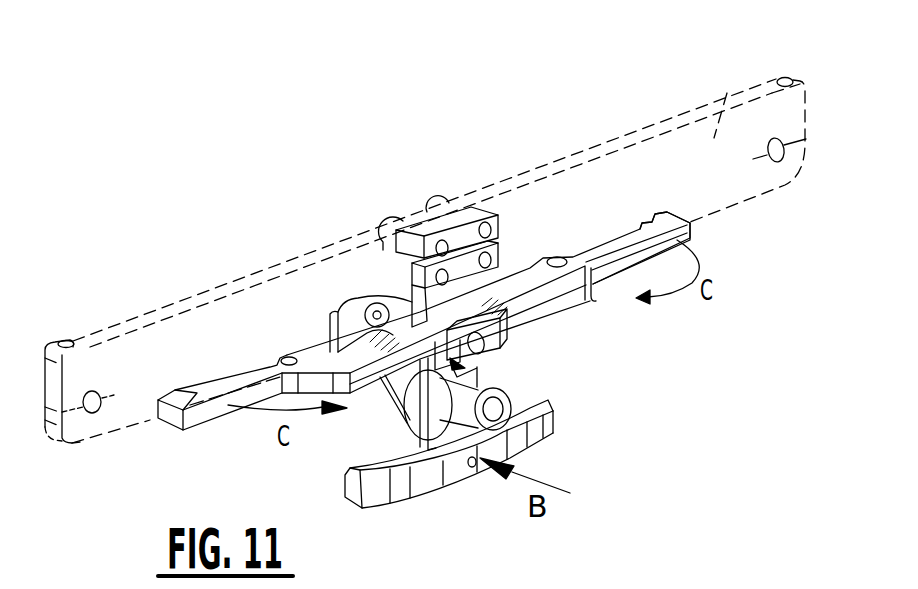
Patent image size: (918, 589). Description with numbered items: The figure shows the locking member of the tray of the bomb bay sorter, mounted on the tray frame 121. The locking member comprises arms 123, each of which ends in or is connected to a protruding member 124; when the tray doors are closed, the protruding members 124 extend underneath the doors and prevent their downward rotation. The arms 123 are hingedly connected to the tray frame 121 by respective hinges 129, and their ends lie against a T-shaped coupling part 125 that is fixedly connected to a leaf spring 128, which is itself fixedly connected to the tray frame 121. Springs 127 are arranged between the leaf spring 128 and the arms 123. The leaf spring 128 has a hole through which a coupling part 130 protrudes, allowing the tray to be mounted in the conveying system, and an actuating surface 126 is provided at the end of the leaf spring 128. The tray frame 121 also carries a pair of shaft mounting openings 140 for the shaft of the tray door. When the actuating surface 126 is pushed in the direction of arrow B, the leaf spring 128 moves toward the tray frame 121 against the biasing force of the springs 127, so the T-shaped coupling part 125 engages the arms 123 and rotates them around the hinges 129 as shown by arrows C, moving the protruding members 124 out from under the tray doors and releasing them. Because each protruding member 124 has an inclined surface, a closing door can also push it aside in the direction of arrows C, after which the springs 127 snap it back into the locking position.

The tray frame 121 is at (727, 92).
The arm 123 is at (197, 413).
The protruding member 124 is at (654, 214).
The T-shaped coupling part 125 is at (497, 333).
The actuating surface 126 is at (547, 428).
The springs 127 is at (378, 334).
The leaf spring 128 is at (440, 303).
The hinges 129 is at (288, 357).
The coupling part 130 is at (465, 400).
The shaft mounting openings 140 is at (800, 156).